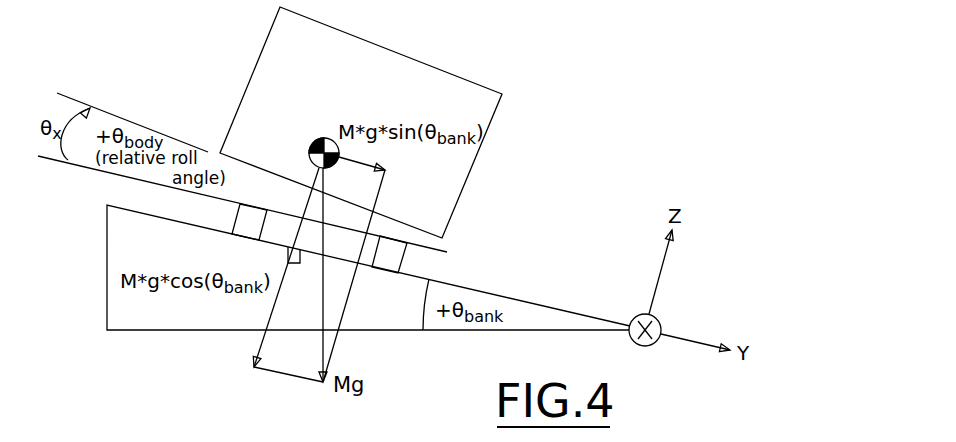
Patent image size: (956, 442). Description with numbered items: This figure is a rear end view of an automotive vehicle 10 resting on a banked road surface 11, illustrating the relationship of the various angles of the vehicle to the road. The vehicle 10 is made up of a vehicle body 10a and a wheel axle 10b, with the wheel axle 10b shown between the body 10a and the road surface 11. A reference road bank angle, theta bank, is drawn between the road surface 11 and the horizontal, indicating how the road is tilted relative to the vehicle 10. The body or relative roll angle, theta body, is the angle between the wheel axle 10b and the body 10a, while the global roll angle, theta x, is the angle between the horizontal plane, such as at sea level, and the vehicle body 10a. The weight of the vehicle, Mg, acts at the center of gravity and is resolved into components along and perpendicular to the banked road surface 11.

The automotive vehicle 10 is at (556, 65).
The vehicle body 10a is at (498, 112).
The wheel axle 10b is at (373, 238).
The road surface 11 is at (125, 205).